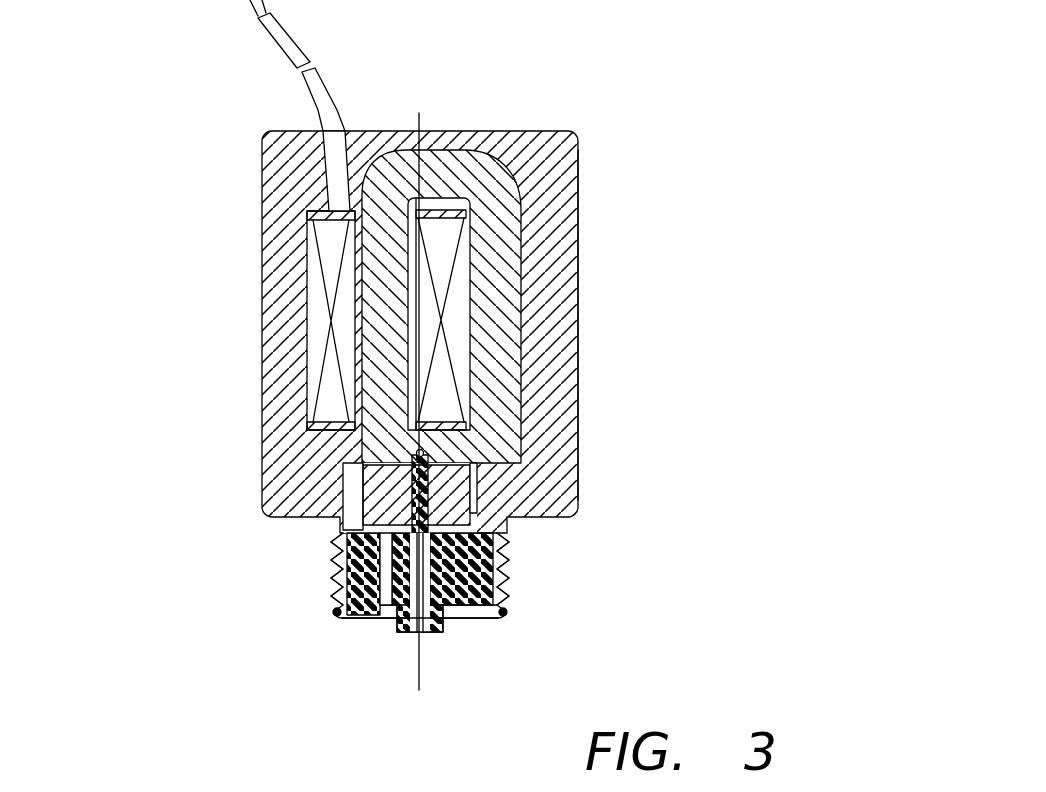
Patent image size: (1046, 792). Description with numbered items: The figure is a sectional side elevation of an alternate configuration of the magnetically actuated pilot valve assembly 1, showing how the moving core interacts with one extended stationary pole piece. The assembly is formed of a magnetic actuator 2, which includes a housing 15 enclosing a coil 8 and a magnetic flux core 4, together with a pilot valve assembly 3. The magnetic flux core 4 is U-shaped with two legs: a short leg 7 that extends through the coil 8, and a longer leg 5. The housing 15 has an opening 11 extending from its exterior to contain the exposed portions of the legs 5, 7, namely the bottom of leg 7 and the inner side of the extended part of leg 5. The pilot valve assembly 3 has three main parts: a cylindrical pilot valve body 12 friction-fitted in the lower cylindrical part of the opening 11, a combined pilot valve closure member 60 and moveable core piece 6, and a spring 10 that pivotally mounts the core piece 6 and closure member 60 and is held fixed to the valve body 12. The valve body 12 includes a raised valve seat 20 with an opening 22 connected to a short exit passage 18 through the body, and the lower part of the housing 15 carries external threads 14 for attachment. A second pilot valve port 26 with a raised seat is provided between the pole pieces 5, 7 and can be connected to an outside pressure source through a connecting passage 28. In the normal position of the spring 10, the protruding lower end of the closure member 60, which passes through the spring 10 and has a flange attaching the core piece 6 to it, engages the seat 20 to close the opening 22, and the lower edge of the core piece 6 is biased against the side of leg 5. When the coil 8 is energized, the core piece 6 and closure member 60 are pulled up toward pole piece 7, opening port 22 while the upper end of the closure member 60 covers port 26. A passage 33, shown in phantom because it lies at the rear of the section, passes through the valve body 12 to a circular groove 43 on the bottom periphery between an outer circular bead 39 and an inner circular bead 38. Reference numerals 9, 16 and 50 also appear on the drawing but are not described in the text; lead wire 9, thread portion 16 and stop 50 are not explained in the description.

The magnetically actuated pilot valve assembly 1 is at (474, 266).
The magnetic actuator 2 is at (524, 317).
The pilot valve assembly 3 is at (493, 627).
The magnetic flux core 4 is at (530, 328).
The longer leg of magnetic flux core 5 is at (503, 298).
The moveable core piece 6 is at (385, 500).
The short leg of magnetic flux core 7 is at (373, 346).
The coil 8 is at (305, 283).
The lead wire 9 is at (302, 60).
The spring 10 is at (425, 530).
The opening 11 is at (407, 490).
The pilot valve body 12 is at (507, 590).
The external threads 14 is at (337, 595).
The housing 15 is at (555, 215).
The external thread 16 is at (338, 558).
The exit passage 18 is at (510, 605).
The valve seat 20 is at (503, 543).
The opening 22 is at (500, 560).
The second pilot valve port 26 is at (440, 460).
The connecting passage 28 is at (428, 445).
The passage 33 is at (325, 540).
The circular bead 38 is at (363, 623).
The circular bead 39 is at (334, 615).
The circular groove 43 is at (340, 623).
The stop 50 is at (497, 526).
The pilot valve closure member 60 is at (475, 476).